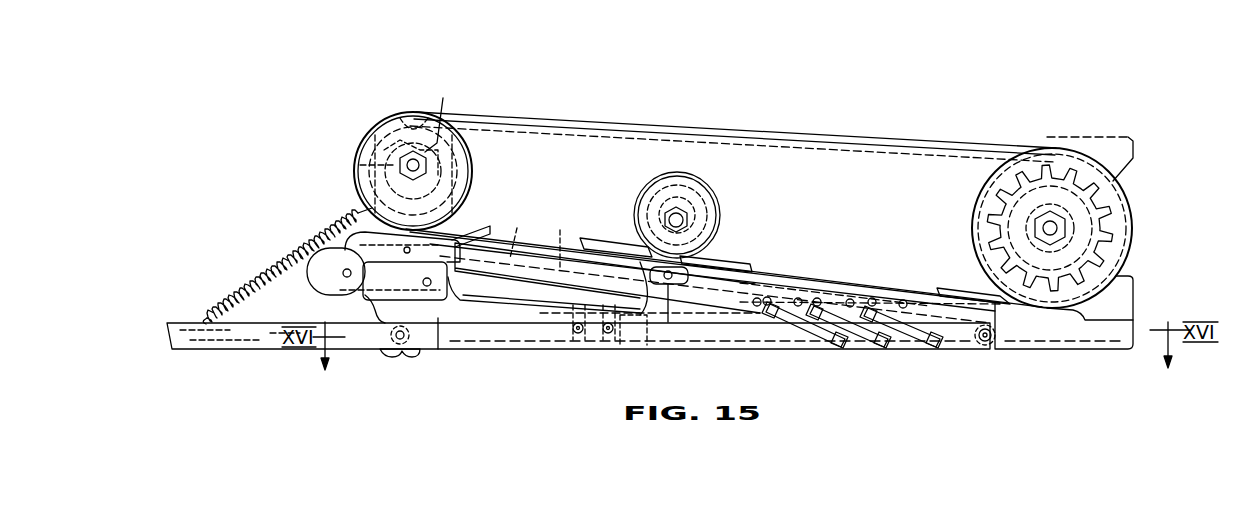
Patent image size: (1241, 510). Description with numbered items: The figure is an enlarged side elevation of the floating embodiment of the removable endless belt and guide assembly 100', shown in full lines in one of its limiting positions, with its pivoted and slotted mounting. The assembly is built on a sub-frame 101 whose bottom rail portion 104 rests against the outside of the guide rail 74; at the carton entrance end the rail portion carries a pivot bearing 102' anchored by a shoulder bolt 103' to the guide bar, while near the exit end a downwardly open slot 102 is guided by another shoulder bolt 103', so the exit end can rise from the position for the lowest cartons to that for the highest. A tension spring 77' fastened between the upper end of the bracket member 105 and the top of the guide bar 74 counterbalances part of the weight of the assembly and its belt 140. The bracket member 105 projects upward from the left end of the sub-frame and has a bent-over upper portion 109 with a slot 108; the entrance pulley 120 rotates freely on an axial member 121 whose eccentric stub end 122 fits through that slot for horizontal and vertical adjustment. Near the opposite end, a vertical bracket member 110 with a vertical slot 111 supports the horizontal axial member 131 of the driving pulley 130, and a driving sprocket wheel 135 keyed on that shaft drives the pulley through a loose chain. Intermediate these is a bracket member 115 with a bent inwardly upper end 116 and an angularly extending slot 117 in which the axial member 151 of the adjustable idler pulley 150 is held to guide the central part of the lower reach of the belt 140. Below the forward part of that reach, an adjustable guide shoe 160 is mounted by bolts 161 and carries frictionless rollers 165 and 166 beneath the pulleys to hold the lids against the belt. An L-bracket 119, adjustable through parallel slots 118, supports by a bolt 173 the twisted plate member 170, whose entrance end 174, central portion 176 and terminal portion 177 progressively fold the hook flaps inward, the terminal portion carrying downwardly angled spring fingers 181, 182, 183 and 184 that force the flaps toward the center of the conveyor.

The guide rail 74 is at (262, 340).
The tension spring 77' is at (287, 266).
The floating endless belt and guide assembly 100' is at (1124, 135).
The sub-frame 101 is at (1078, 352).
The downwardly open slot 102 is at (1007, 357).
The pivot bearing 102' is at (413, 368).
The shoulder bolt 103' is at (668, 359).
The bottom rail portion 104 is at (758, 333).
The bracket member 105 is at (466, 158).
The slot 108 is at (418, 118).
The bent-over upper portion 109 is at (372, 161).
The vertical bracket member 110 is at (1100, 308).
The vertical slot 111 is at (1010, 203).
The bracket member 115 is at (700, 230).
The bent inwardly upper end 116 is at (715, 186).
The angularly extending slot 117 is at (706, 205).
The parallel slots 118 is at (638, 350).
The L-bracket 119 is at (545, 297).
The pulley 120 is at (468, 178).
The axial member 121 is at (443, 118).
The eccentric stub end 122 is at (385, 135).
The driving pulley 130 is at (1058, 158).
The horizontal axial member 131 is at (1062, 230).
The driving sprocket wheel 135 is at (1005, 218).
The belt 140 is at (928, 140).
The adjustable idler pulley 150 is at (645, 215).
The axial member 151 is at (665, 218).
The adjustable guide shoe 160 is at (527, 228).
The bolts 161 is at (420, 283).
The frictionless roller 165 is at (400, 190).
The frictionless roller 166 is at (668, 318).
The twisted plate member 170 is at (808, 272).
The bolt 173 is at (595, 245).
The entrance end 174 is at (517, 228).
The central portion 176 is at (760, 278).
The terminal portion 177 is at (890, 293).
The spring finger 181 is at (815, 347).
The spring finger 182 is at (866, 347).
The spring finger 183 is at (918, 347).
The spring finger 184 is at (955, 312).